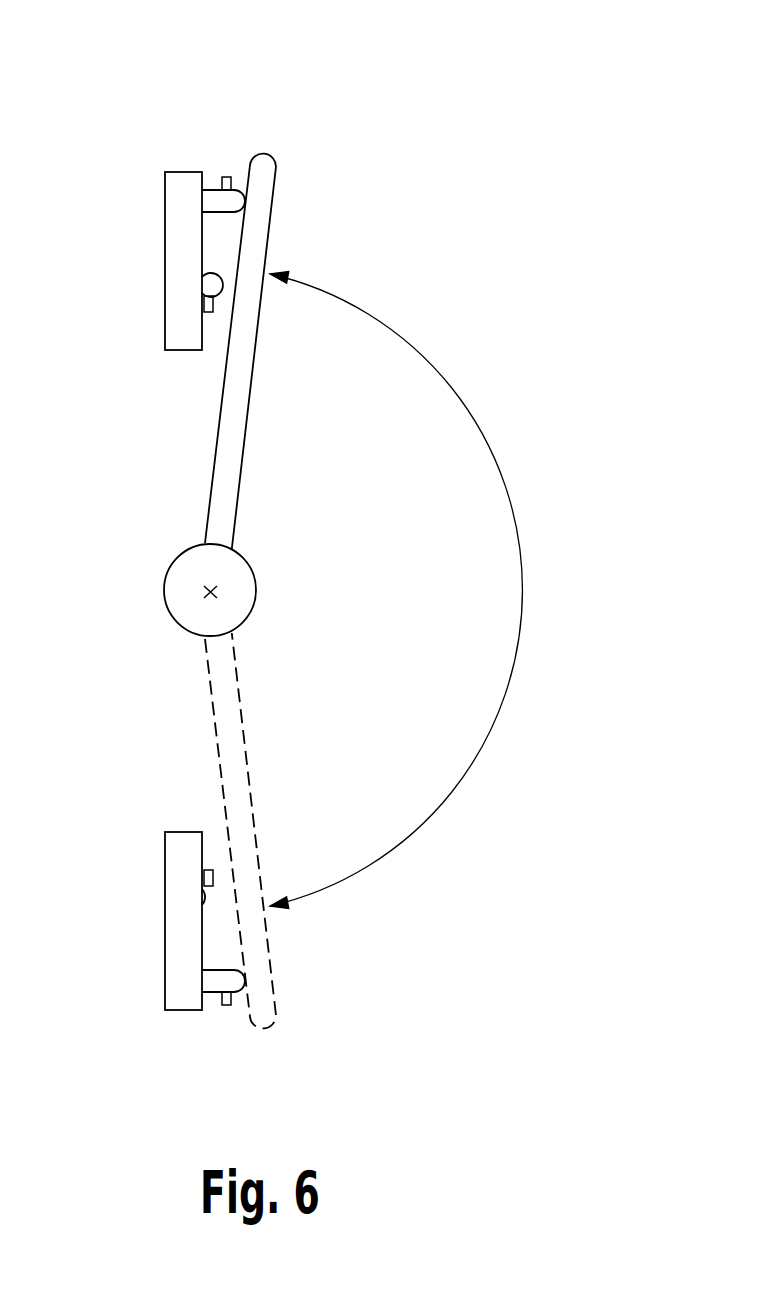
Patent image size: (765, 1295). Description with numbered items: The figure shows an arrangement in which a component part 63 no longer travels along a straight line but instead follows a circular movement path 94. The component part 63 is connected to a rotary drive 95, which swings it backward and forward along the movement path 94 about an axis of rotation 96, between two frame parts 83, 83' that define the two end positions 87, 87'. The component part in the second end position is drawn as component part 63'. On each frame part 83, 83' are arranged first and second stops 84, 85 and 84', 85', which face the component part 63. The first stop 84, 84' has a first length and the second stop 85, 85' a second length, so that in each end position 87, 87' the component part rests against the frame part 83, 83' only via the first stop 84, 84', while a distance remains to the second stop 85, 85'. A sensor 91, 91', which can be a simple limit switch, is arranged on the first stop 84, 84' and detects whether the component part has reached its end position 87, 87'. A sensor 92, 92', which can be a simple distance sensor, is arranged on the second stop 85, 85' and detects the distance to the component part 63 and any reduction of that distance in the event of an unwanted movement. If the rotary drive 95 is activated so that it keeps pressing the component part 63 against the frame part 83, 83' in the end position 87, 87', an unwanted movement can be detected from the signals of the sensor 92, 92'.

The component part 63 is at (287, 351).
The frame part 83 is at (136, 261).
The first stop 84 is at (158, 202).
The second stop 85 is at (147, 290).
The sensor 91 is at (226, 135).
The sensor 92 is at (185, 356).
The end position 87 is at (251, 287).
The rotary drive 95 is at (185, 592).
The axis of rotation 96 is at (217, 589).
The movement path 94 is at (535, 590).
The component part 63' is at (240, 830).
The frame part 83' is at (136, 921).
The first stop 84' is at (157, 983).
The second stop 85' is at (139, 896).
The sensor 91' is at (225, 1049).
The sensor 92' is at (184, 827).
The end position 87' is at (252, 897).